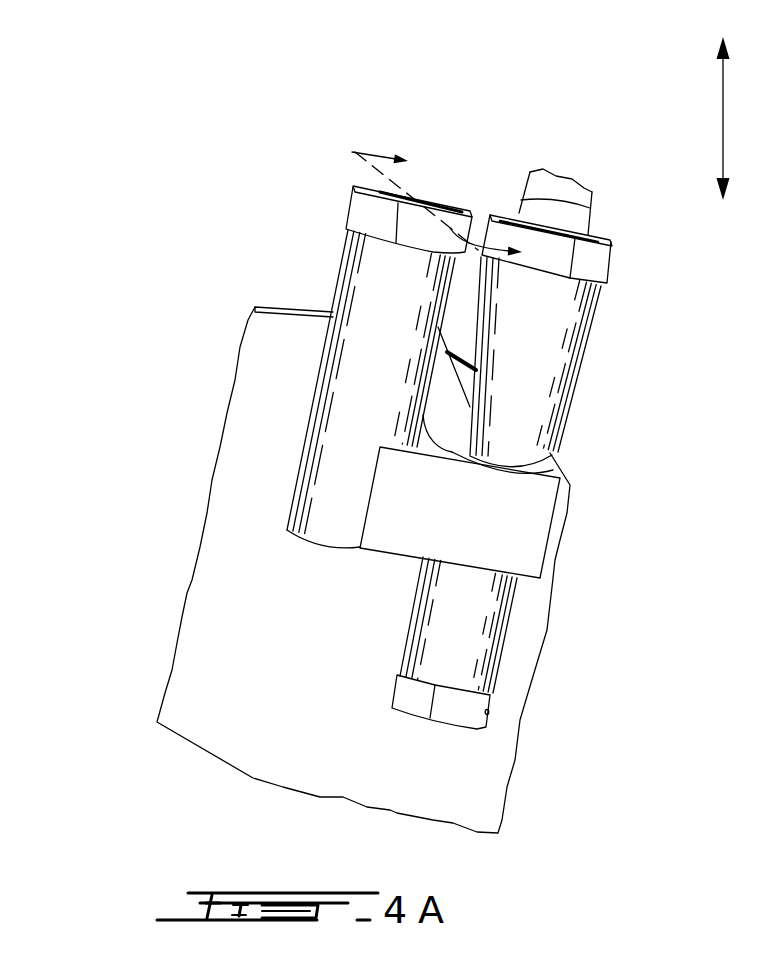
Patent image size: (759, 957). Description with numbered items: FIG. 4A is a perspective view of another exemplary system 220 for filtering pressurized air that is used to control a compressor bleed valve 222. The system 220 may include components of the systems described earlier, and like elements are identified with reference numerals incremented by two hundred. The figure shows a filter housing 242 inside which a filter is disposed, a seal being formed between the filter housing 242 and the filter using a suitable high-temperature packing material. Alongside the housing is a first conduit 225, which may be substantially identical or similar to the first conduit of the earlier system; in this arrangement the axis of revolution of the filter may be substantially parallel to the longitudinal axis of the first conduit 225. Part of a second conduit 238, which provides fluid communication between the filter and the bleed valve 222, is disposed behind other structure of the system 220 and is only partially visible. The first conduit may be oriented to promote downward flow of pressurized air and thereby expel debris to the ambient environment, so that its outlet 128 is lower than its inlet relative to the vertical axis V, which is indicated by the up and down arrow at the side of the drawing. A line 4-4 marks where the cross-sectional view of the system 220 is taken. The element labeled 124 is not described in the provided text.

The system 220 is at (218, 142).
The bleed valve 222 is at (268, 372).
The filter housing 242 is at (382, 303).
The second conduit 238 is at (447, 390).
The first conduit 225 is at (517, 417).
The shaft 124 is at (512, 174).
The outlet 128 is at (433, 735).
The line 4- 4 is at (429, 208).
The vertical axis V is at (722, 87).